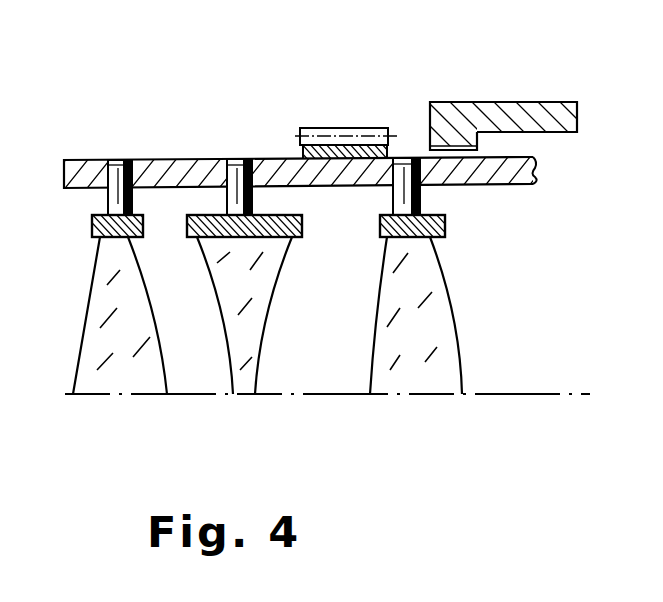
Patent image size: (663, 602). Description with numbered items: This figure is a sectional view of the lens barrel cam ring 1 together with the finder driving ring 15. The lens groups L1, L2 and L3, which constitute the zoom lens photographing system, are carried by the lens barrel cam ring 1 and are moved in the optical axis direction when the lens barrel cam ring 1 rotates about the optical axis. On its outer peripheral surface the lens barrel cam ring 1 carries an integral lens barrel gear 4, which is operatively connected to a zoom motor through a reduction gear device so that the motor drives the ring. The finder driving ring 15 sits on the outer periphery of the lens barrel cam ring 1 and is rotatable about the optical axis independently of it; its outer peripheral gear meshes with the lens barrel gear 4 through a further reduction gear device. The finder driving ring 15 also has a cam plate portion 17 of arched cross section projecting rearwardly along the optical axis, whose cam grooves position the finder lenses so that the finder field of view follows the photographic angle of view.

The lens barrel cam ring 1 is at (96, 172).
The lens barrel gear 4 is at (318, 128).
The finder driving ring 15 is at (453, 110).
The cam plate portion 17 is at (579, 114).
The lens group L1 is at (95, 348).
The lens group L2 is at (245, 348).
The lens group L3 is at (383, 350).